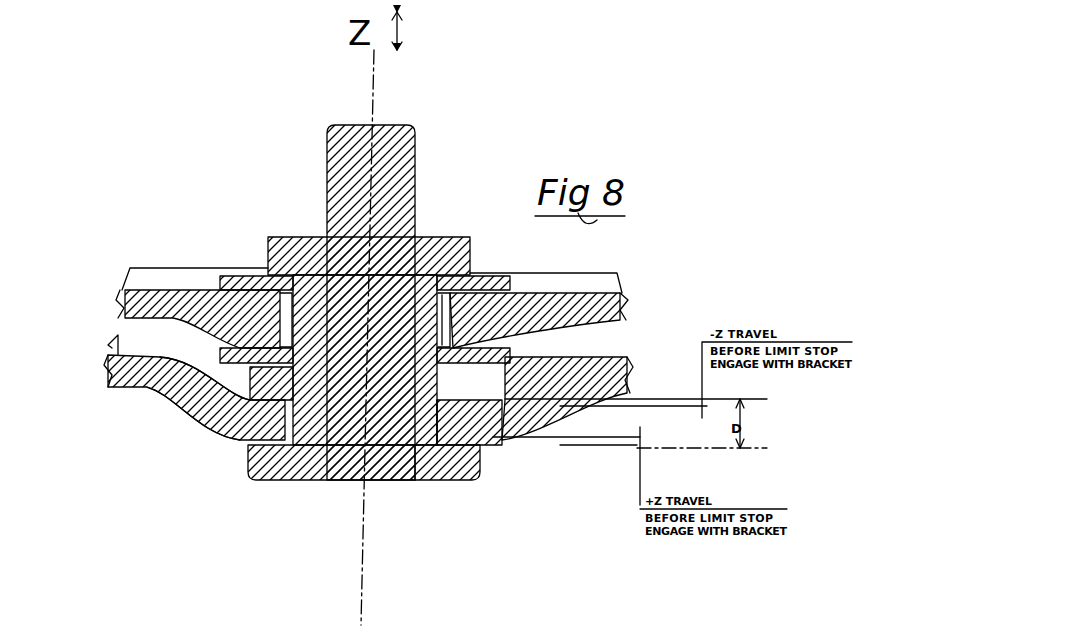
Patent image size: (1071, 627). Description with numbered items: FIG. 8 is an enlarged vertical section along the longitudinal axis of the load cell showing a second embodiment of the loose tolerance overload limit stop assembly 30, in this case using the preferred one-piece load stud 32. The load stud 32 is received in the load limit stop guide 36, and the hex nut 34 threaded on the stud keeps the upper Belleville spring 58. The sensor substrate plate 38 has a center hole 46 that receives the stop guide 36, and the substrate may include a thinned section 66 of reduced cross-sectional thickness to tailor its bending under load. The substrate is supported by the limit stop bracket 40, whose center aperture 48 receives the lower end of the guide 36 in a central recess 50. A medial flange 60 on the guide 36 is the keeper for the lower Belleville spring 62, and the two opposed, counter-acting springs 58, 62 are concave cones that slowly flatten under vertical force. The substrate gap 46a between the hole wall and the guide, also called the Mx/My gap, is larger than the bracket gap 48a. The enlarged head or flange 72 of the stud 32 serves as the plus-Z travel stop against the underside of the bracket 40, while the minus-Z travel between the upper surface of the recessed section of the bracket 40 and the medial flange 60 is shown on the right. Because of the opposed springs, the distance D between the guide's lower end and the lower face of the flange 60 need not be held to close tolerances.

The loose tolerance overload limit stop assembly 30 is at (252, 188).
The load stud 32 is at (396, 130).
The hex nut 34 is at (455, 240).
The load limit stop guide 36 is at (300, 236).
The sensor substrate plate 38 is at (125, 300).
The limit stop bracket 40 is at (110, 378).
The sensor substrate plate center hole 46 is at (495, 272).
The substrate gap 46a is at (482, 338).
The center aperture 48 is at (438, 446).
The gap in the limit stop bracket 48a is at (410, 448).
The central recess 50 is at (165, 405).
The upper Belleville spring 58 is at (245, 276).
The medial flange 60 is at (215, 410).
The lower Belleville spring 62 is at (493, 356).
The thinned section 66 is at (160, 322).
The enlarged head/flange 72 is at (290, 465).